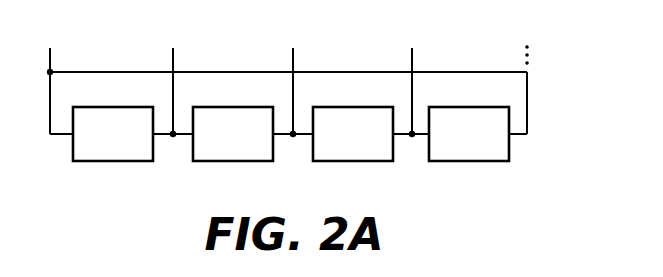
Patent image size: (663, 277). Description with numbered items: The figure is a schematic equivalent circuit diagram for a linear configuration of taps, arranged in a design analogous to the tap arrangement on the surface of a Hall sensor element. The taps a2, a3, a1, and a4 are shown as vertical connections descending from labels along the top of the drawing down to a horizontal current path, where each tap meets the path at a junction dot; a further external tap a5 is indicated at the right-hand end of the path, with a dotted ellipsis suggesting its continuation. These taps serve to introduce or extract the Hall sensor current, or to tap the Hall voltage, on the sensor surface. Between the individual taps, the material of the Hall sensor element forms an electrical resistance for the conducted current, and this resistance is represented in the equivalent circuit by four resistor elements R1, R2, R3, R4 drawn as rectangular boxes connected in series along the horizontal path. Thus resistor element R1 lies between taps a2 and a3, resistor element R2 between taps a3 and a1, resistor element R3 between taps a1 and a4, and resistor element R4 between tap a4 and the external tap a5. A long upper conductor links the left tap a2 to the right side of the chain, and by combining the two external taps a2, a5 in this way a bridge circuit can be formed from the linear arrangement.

The tap a1 is at (293, 74).
The tap a2 is at (50, 43).
The tap a3 is at (173, 74).
The tap a4 is at (412, 74).
The external tap a5 is at (530, 38).
The resistor element R1 is at (113, 134).
The resistor element R2 is at (233, 134).
The resistor element R3 is at (353, 134).
The resistor element R4 is at (469, 134).